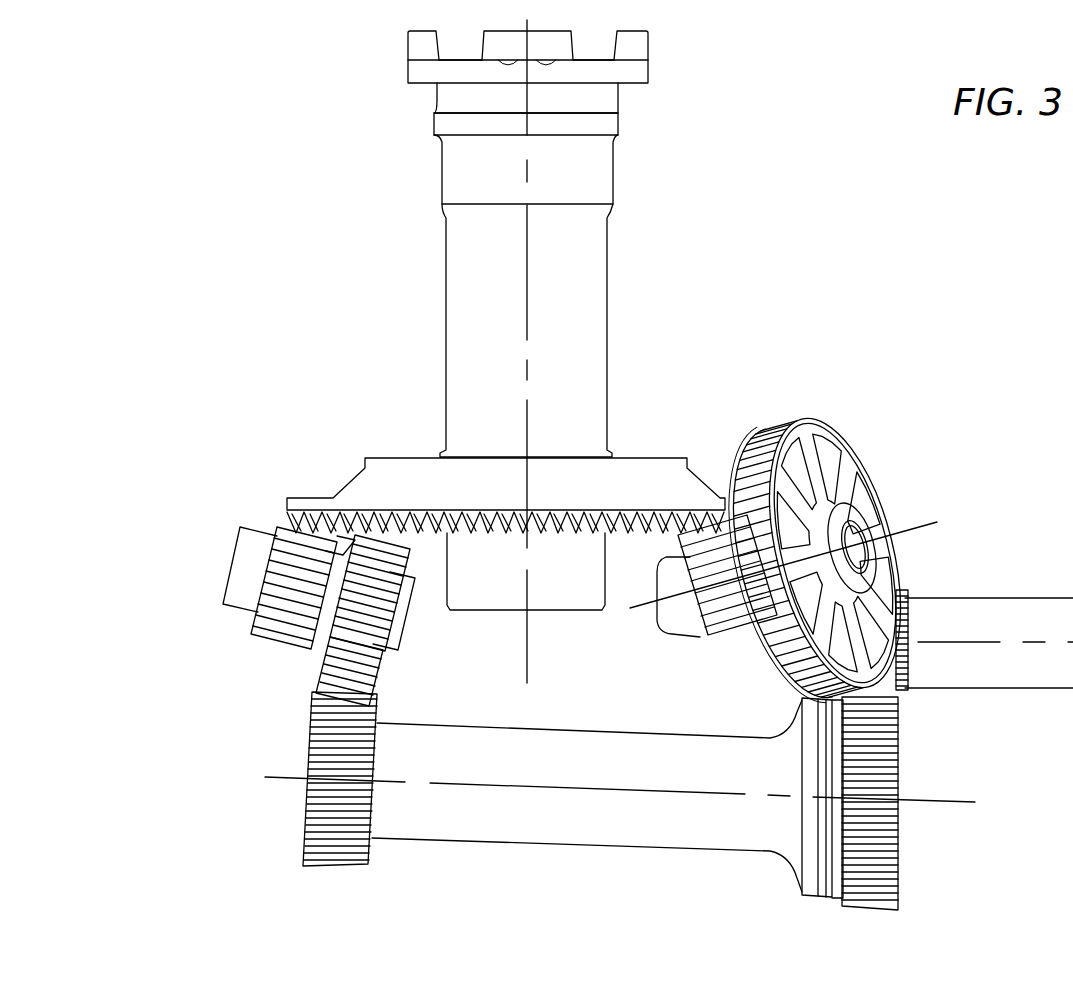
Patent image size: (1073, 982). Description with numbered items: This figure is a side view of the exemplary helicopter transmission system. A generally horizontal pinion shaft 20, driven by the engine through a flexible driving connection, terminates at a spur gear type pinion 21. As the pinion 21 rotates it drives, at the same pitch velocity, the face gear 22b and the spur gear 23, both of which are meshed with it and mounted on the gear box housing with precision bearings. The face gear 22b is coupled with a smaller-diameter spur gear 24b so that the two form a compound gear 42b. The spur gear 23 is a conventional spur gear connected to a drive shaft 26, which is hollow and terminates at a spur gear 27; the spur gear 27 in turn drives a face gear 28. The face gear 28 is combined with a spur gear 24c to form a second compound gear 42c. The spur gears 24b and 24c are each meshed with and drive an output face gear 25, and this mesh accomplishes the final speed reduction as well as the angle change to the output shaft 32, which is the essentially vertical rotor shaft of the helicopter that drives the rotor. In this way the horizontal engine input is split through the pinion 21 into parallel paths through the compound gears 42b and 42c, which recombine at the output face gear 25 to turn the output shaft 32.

The pinion shaft 20 is at (960, 615).
The spur gear type pinion 21 is at (905, 690).
The face gear 22b is at (766, 440).
The spur gear 23 is at (867, 852).
The spur gear 24b is at (712, 613).
The spur gear 24c is at (280, 625).
The output face gear 25 is at (410, 468).
The drive shaft 26 is at (592, 818).
The spur gear 27 is at (332, 848).
The face gear 28 is at (342, 672).
The output shaft 32 is at (585, 262).
The compound gear 42b is at (746, 657).
The compound gear 42c is at (284, 671).